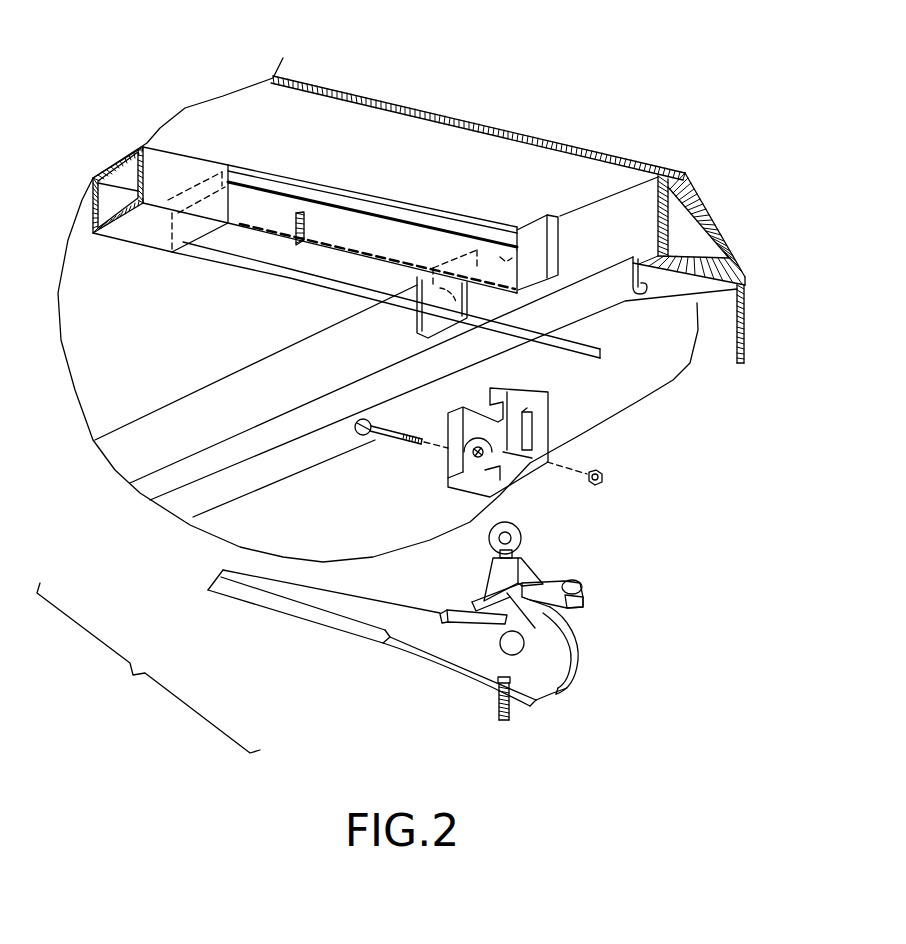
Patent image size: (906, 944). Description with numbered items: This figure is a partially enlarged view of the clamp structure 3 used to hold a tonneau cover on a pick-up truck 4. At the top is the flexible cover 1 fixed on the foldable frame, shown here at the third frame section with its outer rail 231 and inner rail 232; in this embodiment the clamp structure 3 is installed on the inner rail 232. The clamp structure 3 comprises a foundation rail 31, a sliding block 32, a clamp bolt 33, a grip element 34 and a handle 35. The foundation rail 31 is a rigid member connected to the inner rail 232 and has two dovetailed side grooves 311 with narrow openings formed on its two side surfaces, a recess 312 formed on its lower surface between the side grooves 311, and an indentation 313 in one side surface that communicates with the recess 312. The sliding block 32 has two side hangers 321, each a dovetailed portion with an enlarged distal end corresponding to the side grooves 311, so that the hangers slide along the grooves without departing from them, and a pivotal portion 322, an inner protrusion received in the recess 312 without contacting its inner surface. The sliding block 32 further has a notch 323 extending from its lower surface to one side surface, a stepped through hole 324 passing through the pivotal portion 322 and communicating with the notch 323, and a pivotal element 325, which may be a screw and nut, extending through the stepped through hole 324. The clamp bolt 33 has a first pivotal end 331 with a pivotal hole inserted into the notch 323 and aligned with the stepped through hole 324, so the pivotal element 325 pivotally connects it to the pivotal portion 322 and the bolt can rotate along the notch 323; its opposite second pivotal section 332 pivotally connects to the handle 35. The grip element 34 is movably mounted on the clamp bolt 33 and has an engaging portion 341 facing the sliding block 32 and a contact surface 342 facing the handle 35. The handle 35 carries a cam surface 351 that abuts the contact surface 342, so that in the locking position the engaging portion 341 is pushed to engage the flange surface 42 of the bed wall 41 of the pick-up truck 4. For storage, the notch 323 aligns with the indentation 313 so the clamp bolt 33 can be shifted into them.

The flexible cover 1 is at (453, 115).
The outer rail 231 is at (625, 217).
The inner rail 232 is at (165, 164).
The clamp structure 3 is at (148, 668).
The foundation rail 31 is at (324, 358).
The side grooves 311 is at (283, 176).
The recess 312 is at (325, 266).
The indentation 313 is at (305, 240).
The sliding block 32 is at (381, 481).
The side hangers 321 is at (498, 386).
The pivotal portion 322 is at (463, 457).
The notch 323 is at (530, 430).
The stepped through hole 324 is at (468, 457).
The pivotal element 325 is at (361, 421).
The clamp bolt 33 is at (419, 644).
The first pivotal end 331 is at (525, 523).
The second pivotal section 332 is at (515, 695).
The grip element 34 is at (478, 618).
The engaging portion 341 is at (580, 590).
The contact surface 342 is at (583, 607).
The handle 35 is at (459, 659).
The cam surface 351 is at (587, 637).
The pick-up truck 4 is at (486, 345).
The bed wall 41 is at (745, 350).
The flange surface 42 is at (641, 296).